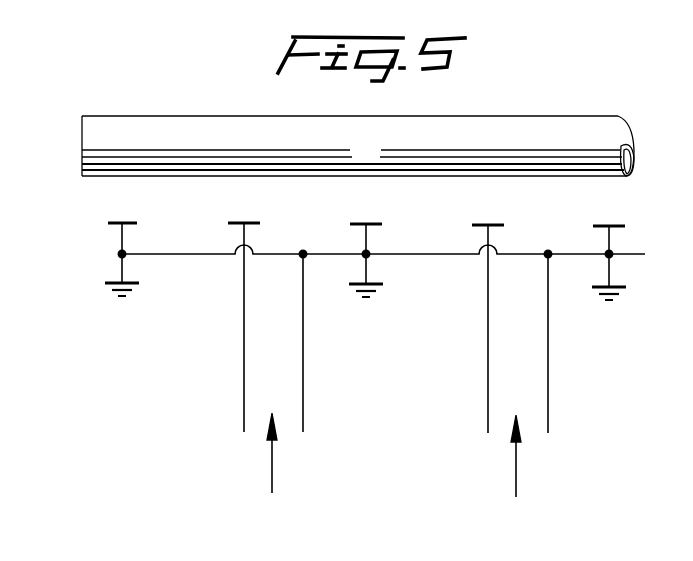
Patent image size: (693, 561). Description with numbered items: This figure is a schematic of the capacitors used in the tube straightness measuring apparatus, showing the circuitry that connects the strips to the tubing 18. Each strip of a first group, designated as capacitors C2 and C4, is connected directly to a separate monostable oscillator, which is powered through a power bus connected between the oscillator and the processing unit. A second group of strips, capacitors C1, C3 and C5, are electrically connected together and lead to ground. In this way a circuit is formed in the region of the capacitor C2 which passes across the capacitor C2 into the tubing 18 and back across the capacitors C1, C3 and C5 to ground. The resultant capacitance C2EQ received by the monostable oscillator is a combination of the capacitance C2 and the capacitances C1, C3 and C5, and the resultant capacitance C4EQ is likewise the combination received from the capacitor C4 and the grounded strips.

The tubing 18 is at (373, 159).
The capacitor C1 is at (134, 259).
The capacitor C2 is at (267, 327).
The capacitor C3 is at (379, 260).
The capacitor C4 is at (512, 329).
The capacitor C5 is at (622, 263).
The resultant capacitance C2EQ is at (272, 475).
The resultant capacitance C4EQ is at (514, 476).